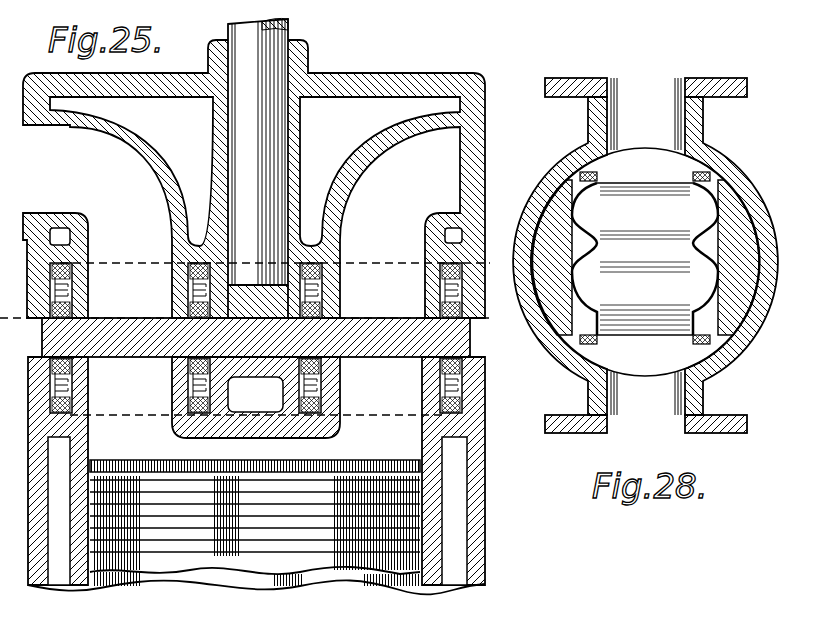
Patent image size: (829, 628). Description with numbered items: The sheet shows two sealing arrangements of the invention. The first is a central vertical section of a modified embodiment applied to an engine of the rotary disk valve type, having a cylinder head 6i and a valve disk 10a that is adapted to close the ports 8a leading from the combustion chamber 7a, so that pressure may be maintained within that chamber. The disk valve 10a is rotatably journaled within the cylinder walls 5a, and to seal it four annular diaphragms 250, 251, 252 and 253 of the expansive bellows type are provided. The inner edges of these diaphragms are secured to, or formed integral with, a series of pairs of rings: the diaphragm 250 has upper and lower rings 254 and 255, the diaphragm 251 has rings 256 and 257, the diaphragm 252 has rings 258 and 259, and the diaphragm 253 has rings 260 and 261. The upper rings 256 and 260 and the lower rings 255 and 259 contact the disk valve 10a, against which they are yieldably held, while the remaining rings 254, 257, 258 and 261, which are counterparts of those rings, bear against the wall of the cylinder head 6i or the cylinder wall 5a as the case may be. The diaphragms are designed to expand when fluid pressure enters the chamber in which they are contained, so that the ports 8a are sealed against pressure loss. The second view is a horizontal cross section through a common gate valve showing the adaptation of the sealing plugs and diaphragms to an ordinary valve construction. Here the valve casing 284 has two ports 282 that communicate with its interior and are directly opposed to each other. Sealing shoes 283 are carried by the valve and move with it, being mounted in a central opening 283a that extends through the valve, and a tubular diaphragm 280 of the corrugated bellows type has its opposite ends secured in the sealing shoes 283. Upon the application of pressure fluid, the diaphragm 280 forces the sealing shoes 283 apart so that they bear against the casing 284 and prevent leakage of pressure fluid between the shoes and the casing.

In FIG. 25, the cylinder head 6i is at (363, 80).
In FIG. 25, the annular diaphragm 250 is at (90, 272).
In FIG. 25, the annular diaphragm 251 is at (338, 262).
In FIG. 25, the annular diaphragm 252 is at (438, 275).
In FIG. 25, the annular diaphragm 253 is at (323, 365).
In FIG. 25, the upper ring 254 is at (72, 264).
In FIG. 25, the lower ring 255 is at (88, 323).
In FIG. 25, the upper ring 256 is at (313, 262).
In FIG. 25, the ring 257 is at (338, 297).
In FIG. 25, the ring 258 is at (72, 363).
In FIG. 25, the lower ring 259 is at (75, 412).
In FIG. 25, the upper ring 260 is at (453, 245).
In FIG. 25, the ring 261 is at (328, 417).
In FIG. 25, the ports 8a is at (133, 304).
In FIG. 25, the valve disk 10a is at (395, 312).
In FIG. 25, the cylinder walls 5a is at (473, 377).
In FIG. 25, the combustion chamber 7a is at (256, 510).
In FIG. 28, the tubular diaphragm 280 is at (713, 182).
In FIG. 28, the ports 282 is at (668, 88).
In FIG. 28, the sealing shoes 283 is at (598, 168).
In FIG. 28, the central opening 283a is at (645, 259).
In FIG. 28, the valve casing 284 is at (753, 307).